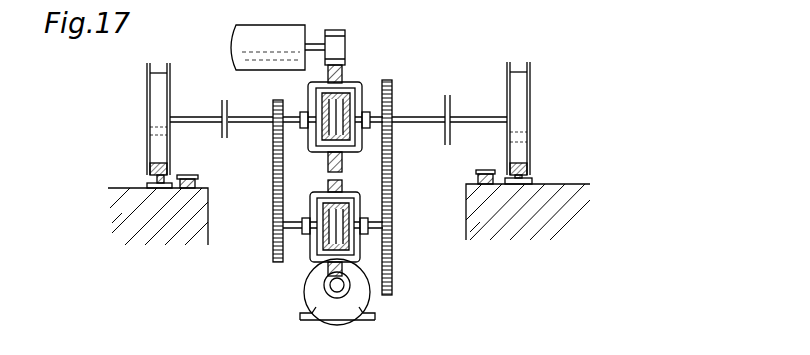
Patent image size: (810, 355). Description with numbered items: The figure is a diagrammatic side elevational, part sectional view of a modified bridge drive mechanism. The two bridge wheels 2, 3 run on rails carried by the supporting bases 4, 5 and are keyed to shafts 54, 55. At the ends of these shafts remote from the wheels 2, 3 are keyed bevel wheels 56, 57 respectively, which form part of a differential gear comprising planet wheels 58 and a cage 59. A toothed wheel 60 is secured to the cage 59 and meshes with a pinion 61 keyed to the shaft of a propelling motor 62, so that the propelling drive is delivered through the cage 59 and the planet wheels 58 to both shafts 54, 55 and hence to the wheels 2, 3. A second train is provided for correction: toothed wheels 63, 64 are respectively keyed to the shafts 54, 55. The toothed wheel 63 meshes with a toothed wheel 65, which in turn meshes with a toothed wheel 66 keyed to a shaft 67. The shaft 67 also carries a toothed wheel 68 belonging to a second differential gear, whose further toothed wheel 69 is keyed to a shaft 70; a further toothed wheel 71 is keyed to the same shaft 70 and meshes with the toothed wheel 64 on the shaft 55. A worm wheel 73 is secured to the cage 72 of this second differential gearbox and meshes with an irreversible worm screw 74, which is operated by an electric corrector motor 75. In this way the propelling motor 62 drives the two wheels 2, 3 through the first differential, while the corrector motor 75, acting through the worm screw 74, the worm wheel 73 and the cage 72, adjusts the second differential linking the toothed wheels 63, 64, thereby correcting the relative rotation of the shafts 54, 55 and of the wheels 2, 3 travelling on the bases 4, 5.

The wheel 2 is at (150, 126).
The wheel 3 is at (529, 112).
The left rail base 4 is at (160, 189).
The right rail base 5 is at (519, 185).
The shaft 54 is at (203, 124).
The shaft 55 is at (468, 122).
The bevel wheel 56 is at (322, 98).
The bevel wheel 57 is at (365, 98).
The planet wheels 58 is at (345, 142).
The cage 59 is at (316, 147).
The toothed wheel 60 is at (343, 73).
The pinion 61 is at (345, 45).
The propelling motor 62 is at (298, 32).
The toothed wheel 63 is at (273, 104).
The toothed wheel 64 is at (393, 97).
The toothed wheel 65 is at (273, 171).
The toothed wheel 66 is at (283, 225).
The shaft 67 is at (295, 222).
The toothed wheel 68 is at (308, 260).
The toothed wheel 69 is at (354, 220).
The shaft 70 is at (368, 229).
The toothed wheel 71 is at (393, 222).
The cage 72 is at (345, 196).
The worm wheel 73 is at (350, 272).
The worm screw 74 is at (324, 288).
The electric corrector motor 75 is at (326, 312).